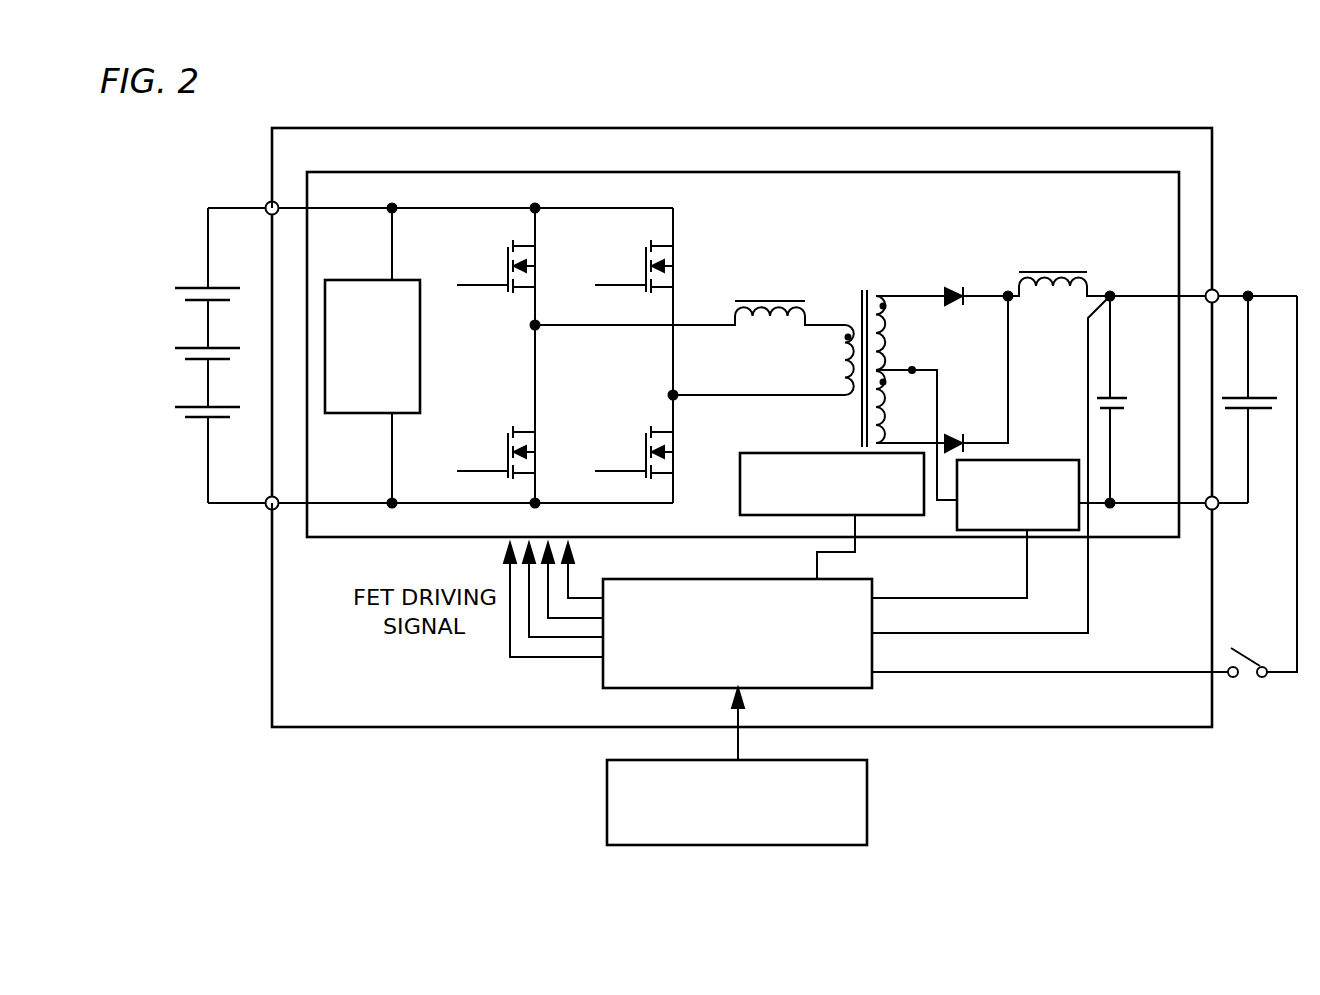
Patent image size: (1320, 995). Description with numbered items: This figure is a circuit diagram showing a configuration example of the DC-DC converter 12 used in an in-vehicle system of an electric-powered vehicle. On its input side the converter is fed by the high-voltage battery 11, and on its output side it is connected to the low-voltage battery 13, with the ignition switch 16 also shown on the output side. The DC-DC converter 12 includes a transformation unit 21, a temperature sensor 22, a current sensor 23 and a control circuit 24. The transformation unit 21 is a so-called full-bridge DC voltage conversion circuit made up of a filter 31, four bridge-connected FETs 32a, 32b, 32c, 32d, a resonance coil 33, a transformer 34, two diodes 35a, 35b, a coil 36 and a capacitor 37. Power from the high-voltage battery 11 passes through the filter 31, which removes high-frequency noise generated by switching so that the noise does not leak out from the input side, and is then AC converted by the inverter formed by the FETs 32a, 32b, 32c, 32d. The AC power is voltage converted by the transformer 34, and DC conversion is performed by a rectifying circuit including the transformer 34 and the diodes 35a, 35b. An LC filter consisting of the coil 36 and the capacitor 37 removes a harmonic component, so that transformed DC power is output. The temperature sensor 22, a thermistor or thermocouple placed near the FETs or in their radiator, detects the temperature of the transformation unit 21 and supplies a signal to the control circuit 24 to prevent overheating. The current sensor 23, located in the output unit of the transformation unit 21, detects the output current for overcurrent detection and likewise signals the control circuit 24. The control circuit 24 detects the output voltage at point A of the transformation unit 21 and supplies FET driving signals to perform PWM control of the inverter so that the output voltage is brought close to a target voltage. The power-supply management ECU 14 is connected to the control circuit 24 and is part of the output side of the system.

The high-voltage battery 11 is at (186, 322).
The DC-DC converter 12 is at (1113, 128).
The low-voltage battery 13 is at (1262, 395).
The power-supply management ECU 14 is at (867, 806).
The ignition switch 16 is at (1248, 655).
The transformation unit 21 is at (358, 171).
The temperature sensor 22 is at (822, 453).
The current sensor 23 is at (1035, 460).
The control circuit 24 is at (735, 578).
The filter 31 is at (420, 345).
The FET 32a is at (505, 266).
The FET 32b is at (644, 266).
The FET 32c is at (644, 456).
The FET 32d is at (505, 456).
The resonance coil 33 is at (771, 300).
The transformer 34 is at (868, 290).
The diode 35a is at (955, 288).
The diode 35b is at (955, 436).
The coil 36 is at (1050, 271).
The capacitor 37 is at (1120, 390).
The point A is at (1112, 290).